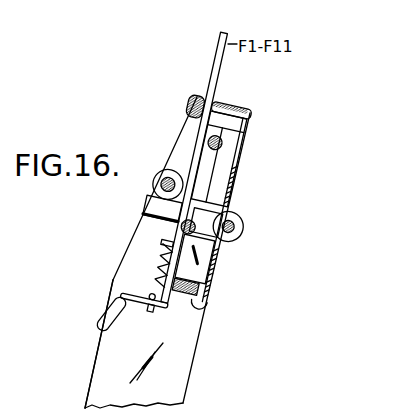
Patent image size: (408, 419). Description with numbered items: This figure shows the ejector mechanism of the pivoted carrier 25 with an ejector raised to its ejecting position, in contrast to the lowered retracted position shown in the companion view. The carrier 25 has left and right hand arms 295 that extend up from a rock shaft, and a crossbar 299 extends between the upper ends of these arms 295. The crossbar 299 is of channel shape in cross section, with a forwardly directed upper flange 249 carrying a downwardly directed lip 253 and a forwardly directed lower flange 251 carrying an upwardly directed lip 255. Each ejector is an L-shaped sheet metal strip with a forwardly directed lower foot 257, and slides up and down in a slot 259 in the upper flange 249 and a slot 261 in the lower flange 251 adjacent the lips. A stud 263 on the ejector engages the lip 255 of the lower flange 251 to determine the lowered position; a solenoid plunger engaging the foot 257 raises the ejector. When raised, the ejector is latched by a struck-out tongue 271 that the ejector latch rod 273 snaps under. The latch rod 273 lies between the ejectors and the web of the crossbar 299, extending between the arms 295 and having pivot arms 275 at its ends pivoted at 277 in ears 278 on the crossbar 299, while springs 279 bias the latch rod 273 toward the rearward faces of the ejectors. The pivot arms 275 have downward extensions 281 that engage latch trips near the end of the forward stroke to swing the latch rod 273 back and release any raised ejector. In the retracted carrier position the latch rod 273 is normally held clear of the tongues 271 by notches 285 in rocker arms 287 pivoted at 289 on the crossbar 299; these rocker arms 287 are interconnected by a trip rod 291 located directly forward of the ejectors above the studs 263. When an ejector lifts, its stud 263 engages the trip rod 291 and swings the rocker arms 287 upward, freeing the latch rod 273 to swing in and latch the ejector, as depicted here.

The pivoted carrier 25 is at (196, 361).
The upper flange 249 is at (230, 100).
The lower flange 251 is at (201, 299).
The downwardly directed lip 253 is at (192, 104).
The upwardly directed lip 255 is at (157, 270).
The lower foot 257 is at (117, 302).
The slot 259 is at (207, 92).
The slot 261 is at (170, 297).
The stud 263 is at (176, 222).
The struck-out tongue 271 is at (212, 212).
The ejector latch rod 273 is at (213, 263).
The pivot arms 275 is at (235, 162).
The pivot 277 is at (233, 139).
The ears 278 is at (210, 123).
The springs 279 is at (170, 250).
The extensions 281 is at (103, 326).
The notches 285 is at (219, 219).
The rocker arms 287 is at (158, 176).
The pivot 289 is at (244, 231).
The trip rod 291 is at (156, 186).
The arms 295 is at (102, 382).
The crossbar 299 is at (251, 115).